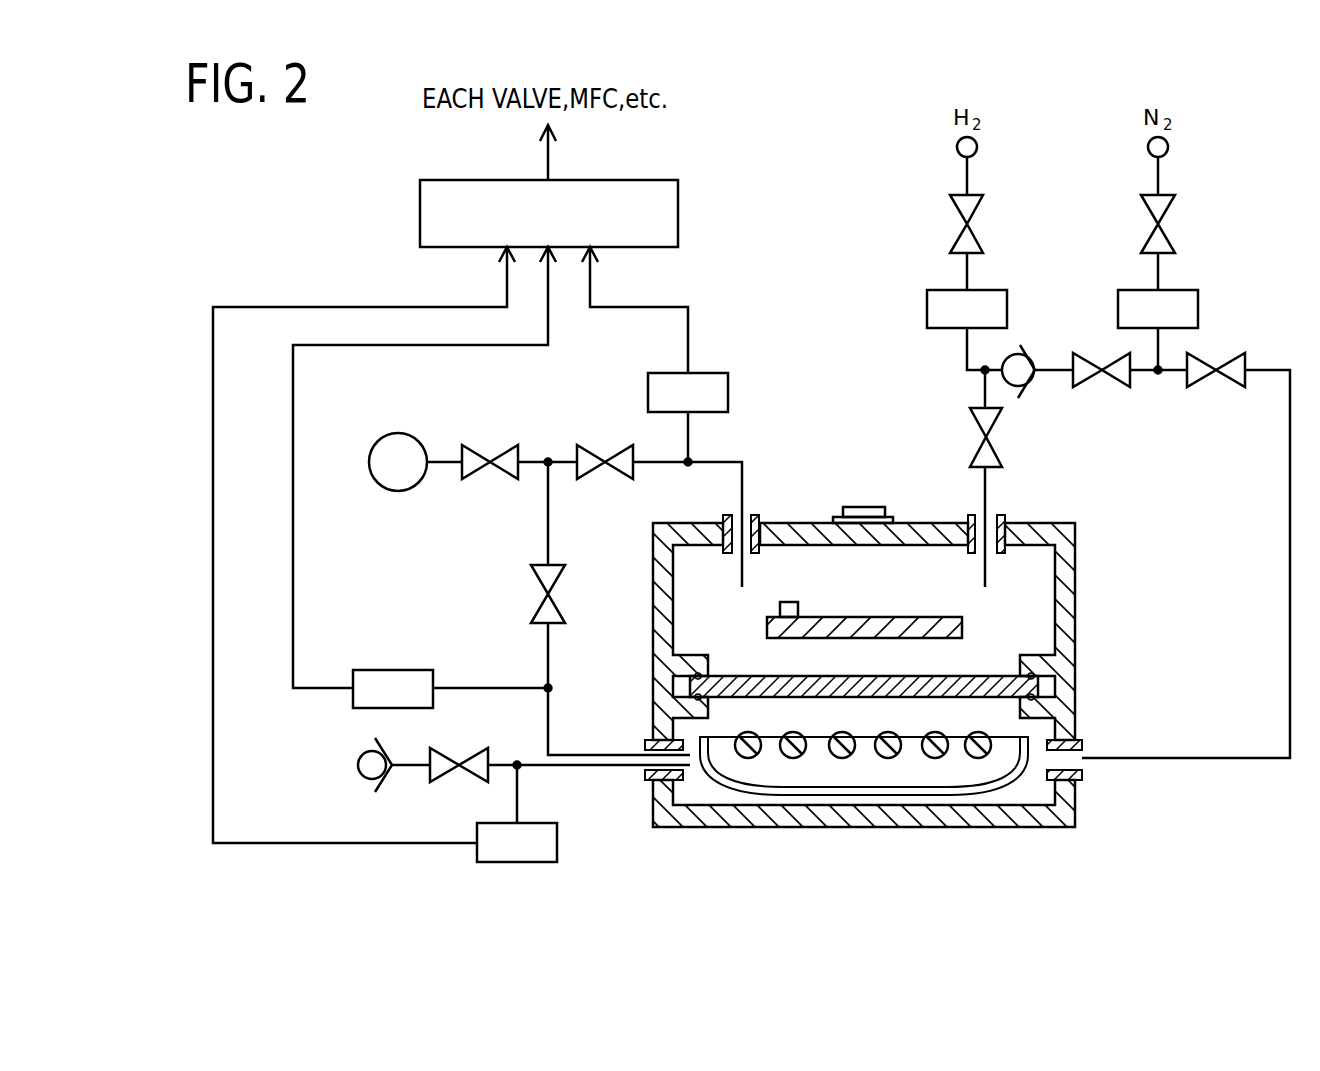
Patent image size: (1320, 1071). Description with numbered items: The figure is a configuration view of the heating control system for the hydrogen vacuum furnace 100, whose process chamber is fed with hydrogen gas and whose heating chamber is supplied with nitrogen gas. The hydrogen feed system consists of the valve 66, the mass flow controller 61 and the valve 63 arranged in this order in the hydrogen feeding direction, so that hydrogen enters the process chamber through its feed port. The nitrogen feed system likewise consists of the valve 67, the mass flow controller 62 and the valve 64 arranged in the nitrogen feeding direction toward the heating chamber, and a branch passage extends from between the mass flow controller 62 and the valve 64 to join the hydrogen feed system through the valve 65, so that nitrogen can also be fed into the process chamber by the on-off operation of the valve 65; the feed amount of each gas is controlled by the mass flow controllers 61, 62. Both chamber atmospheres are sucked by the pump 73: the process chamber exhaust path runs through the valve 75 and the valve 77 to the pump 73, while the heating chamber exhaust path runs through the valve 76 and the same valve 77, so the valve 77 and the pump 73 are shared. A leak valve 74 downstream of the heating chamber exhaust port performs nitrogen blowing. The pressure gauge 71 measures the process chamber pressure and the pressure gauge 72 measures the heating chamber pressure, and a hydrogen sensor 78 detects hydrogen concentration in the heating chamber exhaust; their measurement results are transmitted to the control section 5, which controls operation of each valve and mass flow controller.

The control section 5 is at (420, 210).
The mass flow controller 61 is at (927, 292).
The mass flow controller 62 is at (1188, 290).
The valve 63 is at (975, 422).
The valve 64 is at (1205, 378).
The valve 65 is at (1085, 378).
The valve 66 is at (972, 230).
The valve 67 is at (1163, 230).
The pressure gauge 71 is at (712, 375).
The pressure gauge 72 is at (410, 675).
The pump 73 is at (393, 438).
The leak valve 74 is at (448, 760).
The valve 75 is at (620, 447).
The valve 76 is at (543, 610).
The valve 77 is at (508, 447).
The hydrogen sensor 78 is at (557, 838).
The hydrogen vacuum furnace 100 is at (1110, 562).